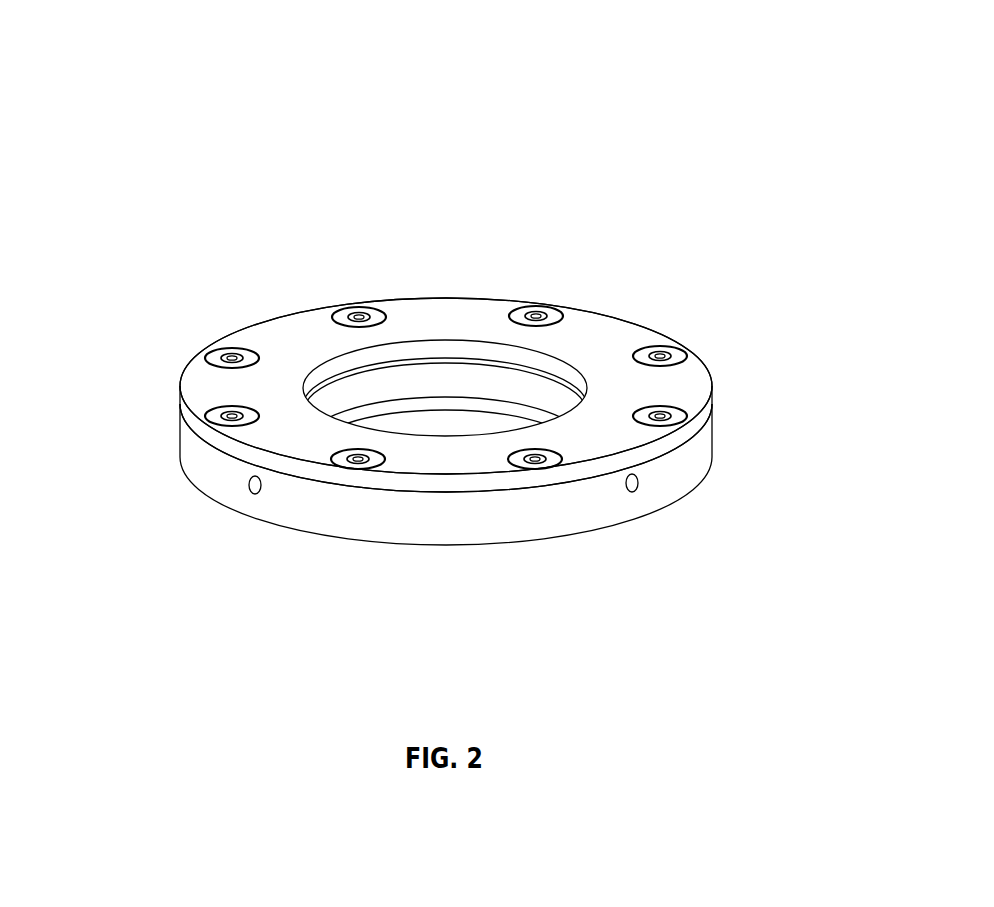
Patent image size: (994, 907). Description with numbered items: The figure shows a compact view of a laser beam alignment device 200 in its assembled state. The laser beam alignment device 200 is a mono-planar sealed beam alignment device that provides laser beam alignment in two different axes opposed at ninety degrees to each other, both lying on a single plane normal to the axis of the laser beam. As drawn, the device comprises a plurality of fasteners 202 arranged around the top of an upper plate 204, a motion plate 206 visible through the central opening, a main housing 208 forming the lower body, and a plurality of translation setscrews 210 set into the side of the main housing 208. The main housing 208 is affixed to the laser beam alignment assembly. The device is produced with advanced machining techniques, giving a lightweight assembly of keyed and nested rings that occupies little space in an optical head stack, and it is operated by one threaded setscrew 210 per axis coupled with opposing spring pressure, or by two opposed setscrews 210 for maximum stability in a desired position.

The laser beam alignment device 200 is at (727, 52).
The fastener 202 is at (707, 288).
The upper plate 204 is at (708, 413).
The motion plate 206 is at (355, 390).
The main housing 208 is at (683, 467).
The translation setscrew 210 is at (262, 489).